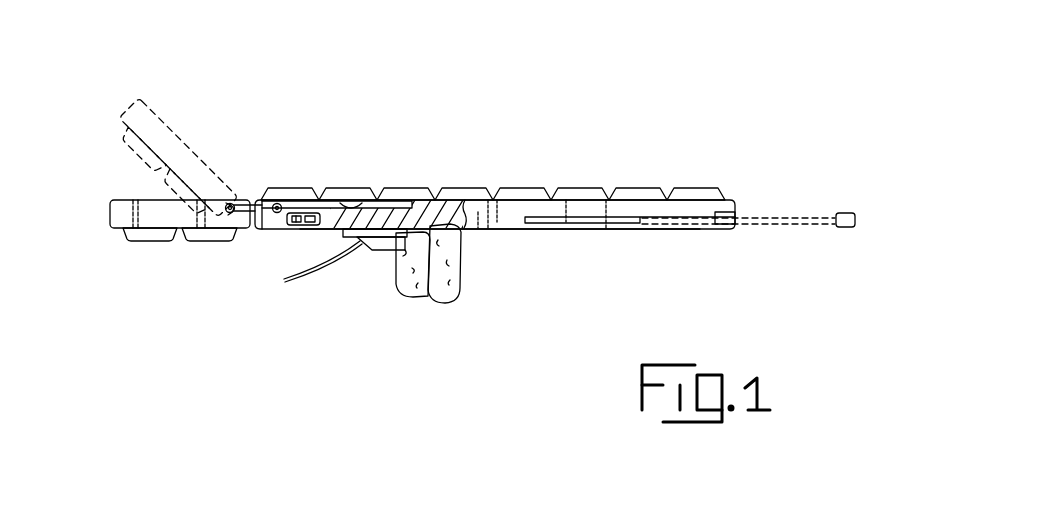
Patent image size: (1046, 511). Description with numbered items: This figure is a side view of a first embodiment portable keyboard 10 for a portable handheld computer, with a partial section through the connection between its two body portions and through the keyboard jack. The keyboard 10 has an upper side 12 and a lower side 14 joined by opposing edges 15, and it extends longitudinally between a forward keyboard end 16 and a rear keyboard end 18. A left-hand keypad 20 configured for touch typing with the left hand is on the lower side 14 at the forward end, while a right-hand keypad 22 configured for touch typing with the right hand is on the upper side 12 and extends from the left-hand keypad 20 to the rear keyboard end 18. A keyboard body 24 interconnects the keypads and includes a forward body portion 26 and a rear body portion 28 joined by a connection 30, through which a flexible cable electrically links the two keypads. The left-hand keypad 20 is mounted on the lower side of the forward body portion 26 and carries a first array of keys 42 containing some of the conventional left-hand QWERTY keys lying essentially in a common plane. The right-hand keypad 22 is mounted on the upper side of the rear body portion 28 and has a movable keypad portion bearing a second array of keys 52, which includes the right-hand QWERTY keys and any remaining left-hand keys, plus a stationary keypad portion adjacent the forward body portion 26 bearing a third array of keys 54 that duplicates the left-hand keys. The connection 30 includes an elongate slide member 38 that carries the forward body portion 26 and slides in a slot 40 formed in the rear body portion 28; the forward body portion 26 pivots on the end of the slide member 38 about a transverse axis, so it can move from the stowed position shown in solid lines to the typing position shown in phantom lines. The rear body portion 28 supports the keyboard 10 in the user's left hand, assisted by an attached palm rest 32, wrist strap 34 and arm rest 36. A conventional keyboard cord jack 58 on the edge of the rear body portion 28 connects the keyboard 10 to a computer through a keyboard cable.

The portable keyboard 10 is at (654, 124).
The upper side 12 is at (738, 202).
The lower side 14 is at (510, 230).
The opposing edges 15 is at (566, 228).
The forward keyboard end 16 is at (108, 213).
The rear keyboard end 18 is at (738, 208).
The left-hand keypad 20 is at (190, 134).
The right-hand keypad 22 is at (414, 172).
The keyboard body 24 is at (478, 232).
The forward body portion 26 is at (130, 204).
The rear body portion 28 is at (672, 232).
The connection 30 is at (258, 238).
The palm rest 32 is at (336, 268).
The wrist strap 34 is at (422, 304).
The arm rest 36 is at (782, 232).
The slide member 38 is at (256, 200).
The slot 40 is at (354, 206).
The first array of keys 42 is at (201, 252).
The second array of keys 52 is at (474, 172).
The third array of keys 54 is at (307, 172).
The keyboard cord jack 58 is at (298, 227).